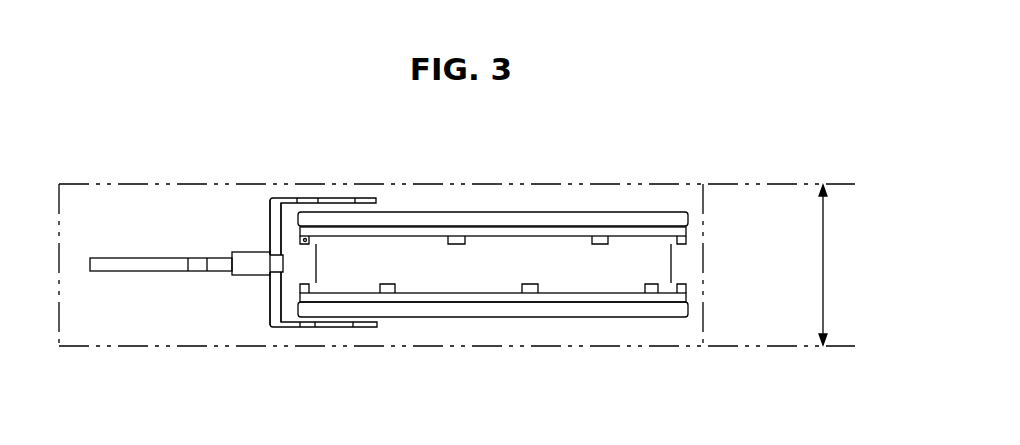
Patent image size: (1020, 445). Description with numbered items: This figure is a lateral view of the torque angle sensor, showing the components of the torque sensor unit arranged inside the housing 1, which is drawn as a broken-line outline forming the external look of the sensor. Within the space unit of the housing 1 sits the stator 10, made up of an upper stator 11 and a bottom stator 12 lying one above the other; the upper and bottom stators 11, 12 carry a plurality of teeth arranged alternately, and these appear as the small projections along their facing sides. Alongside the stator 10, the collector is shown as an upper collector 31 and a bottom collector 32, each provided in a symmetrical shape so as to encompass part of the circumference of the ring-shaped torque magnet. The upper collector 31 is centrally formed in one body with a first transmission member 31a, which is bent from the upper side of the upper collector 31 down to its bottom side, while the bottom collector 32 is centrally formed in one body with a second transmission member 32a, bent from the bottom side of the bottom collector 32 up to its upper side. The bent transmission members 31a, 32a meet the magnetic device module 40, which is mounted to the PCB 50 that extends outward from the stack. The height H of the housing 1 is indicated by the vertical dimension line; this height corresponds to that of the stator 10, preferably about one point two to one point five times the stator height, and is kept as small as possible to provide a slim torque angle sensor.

The housing 1 is at (612, 184).
The stator 10 is at (549, 264).
The upper stator 11 is at (689, 219).
The bottom stator 12 is at (525, 288).
The upper collector 31 is at (326, 199).
The first transmission member 31a is at (268, 218).
The bottom collector 32 is at (303, 328).
The second transmission member 32a is at (256, 277).
The magnetic device module 40 is at (233, 252).
The PCB 50 is at (127, 258).
The height H is at (832, 265).